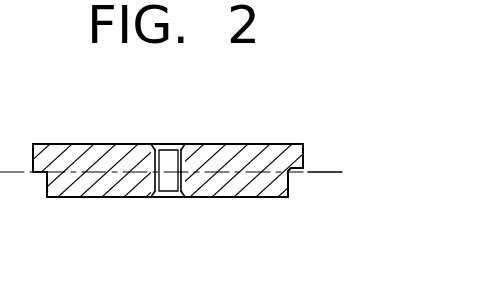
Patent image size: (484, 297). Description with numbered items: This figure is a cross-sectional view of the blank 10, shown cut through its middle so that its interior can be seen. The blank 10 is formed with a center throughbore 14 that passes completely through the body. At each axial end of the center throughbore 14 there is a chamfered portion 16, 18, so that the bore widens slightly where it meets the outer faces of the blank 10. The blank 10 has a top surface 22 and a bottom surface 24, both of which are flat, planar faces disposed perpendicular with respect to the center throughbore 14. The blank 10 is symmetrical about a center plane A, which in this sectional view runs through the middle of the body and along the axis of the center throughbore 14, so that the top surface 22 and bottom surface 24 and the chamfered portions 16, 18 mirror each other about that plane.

The blank 10 is at (258, 197).
The center throughbore 14 is at (160, 143).
The chamfered portion 16 is at (175, 143).
The chamfered portion 18 is at (157, 197).
The top surface 22 is at (290, 143).
The bottom surface 24 is at (78, 197).
The center plane A is at (323, 173).